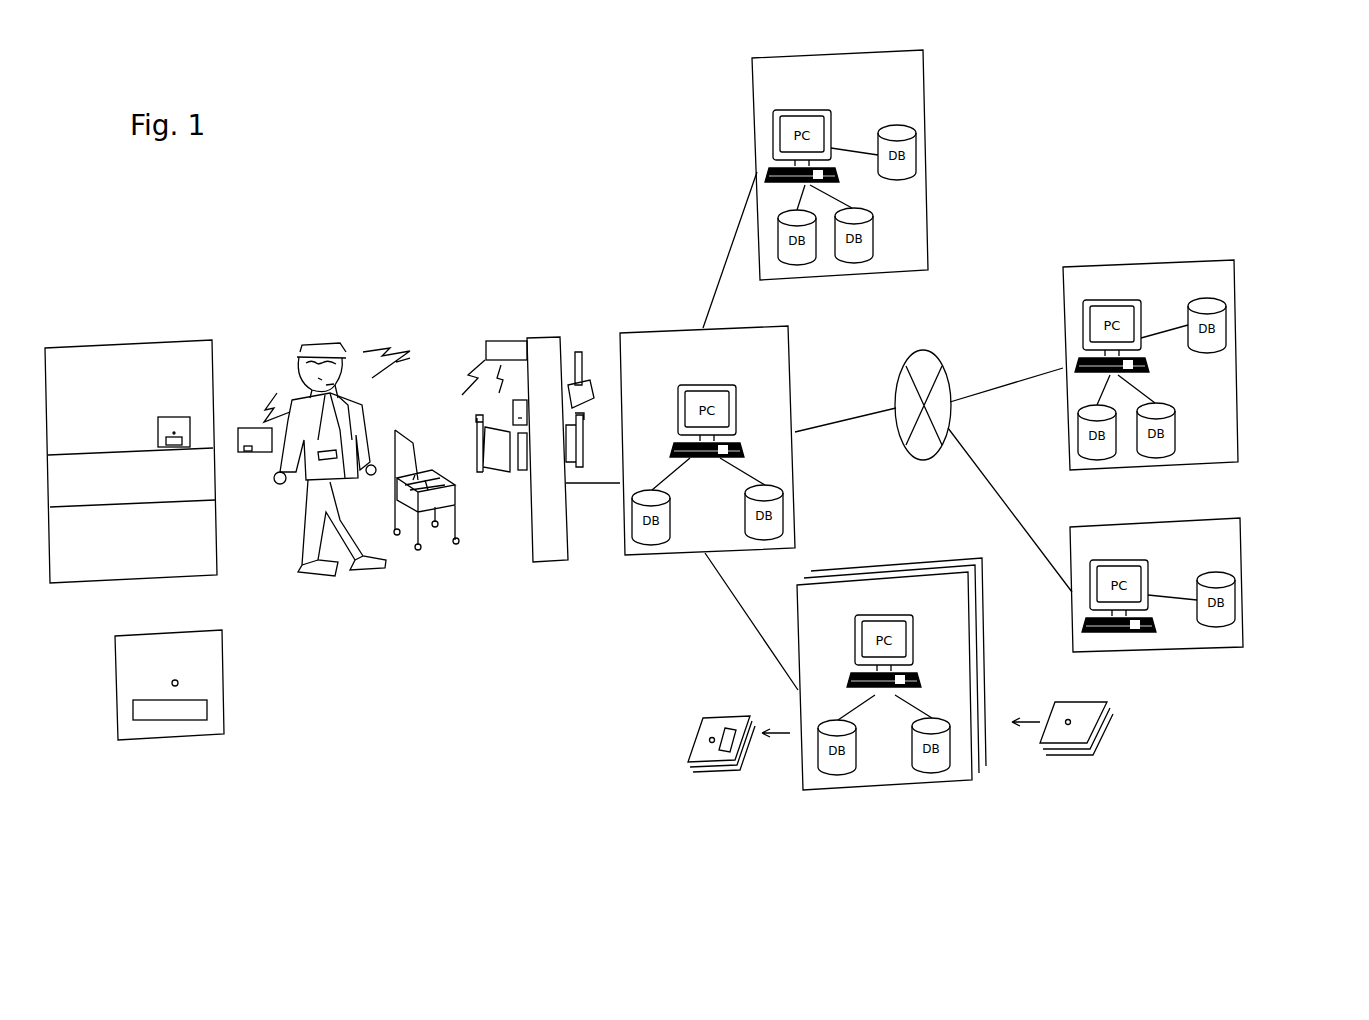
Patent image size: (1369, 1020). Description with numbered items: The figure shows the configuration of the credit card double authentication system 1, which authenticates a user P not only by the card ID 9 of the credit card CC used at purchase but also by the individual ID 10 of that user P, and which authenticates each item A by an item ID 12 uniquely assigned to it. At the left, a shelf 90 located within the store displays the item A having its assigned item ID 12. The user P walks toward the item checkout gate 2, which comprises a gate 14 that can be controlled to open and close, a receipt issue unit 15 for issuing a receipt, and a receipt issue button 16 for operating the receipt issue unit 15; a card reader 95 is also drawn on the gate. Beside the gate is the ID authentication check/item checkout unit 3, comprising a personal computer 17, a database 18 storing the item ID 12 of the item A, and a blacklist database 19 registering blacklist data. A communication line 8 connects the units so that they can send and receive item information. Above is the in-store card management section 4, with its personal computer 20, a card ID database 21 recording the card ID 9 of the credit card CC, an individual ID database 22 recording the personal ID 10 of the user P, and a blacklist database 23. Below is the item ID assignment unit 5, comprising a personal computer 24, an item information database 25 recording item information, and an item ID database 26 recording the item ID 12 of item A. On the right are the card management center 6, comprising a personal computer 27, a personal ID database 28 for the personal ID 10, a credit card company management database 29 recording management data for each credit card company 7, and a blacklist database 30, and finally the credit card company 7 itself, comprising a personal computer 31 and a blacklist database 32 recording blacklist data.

The credit card double authentication system 1 is at (992, 232).
The item checkout gate 2 is at (530, 535).
The ID authentication check/item checkout unit 3 is at (660, 332).
The in-store card management section 4 is at (926, 90).
The item ID assignment unit 5 is at (856, 790).
The card management center 6 is at (1095, 267).
The credit card company 7 is at (1165, 652).
The communication line 8 is at (925, 348).
The card ID 9 is at (248, 452).
The individual ID 10 is at (306, 350).
The item ID 12 is at (173, 447).
The gate 14 is at (492, 462).
The receipt issue unit 15 is at (583, 415).
The receipt issue button 16 is at (520, 400).
The personal computer 17 is at (736, 400).
The database 18 is at (652, 545).
The blacklist database 19 is at (765, 540).
The personal computer 20 is at (773, 136).
The card ID database 21 is at (797, 265).
The individual ID database 22 is at (852, 262).
The blacklist database 23 is at (916, 148).
The personal computer 24 is at (913, 635).
The item information database 25 is at (818, 757).
The item ID database 26 is at (950, 748).
The personal computer 27 is at (1083, 326).
The personal ID database 28 is at (1097, 460).
The credit card company management database 29 is at (1155, 455).
The blacklist database 30 is at (1226, 320).
The personal computer 31 is at (1118, 632).
The blacklist database 32 is at (1218, 627).
The shelf 90 is at (92, 348).
The card reader 95 is at (580, 352).
The item A is at (172, 417).
The credit card CC is at (252, 428).
The user P is at (312, 520).